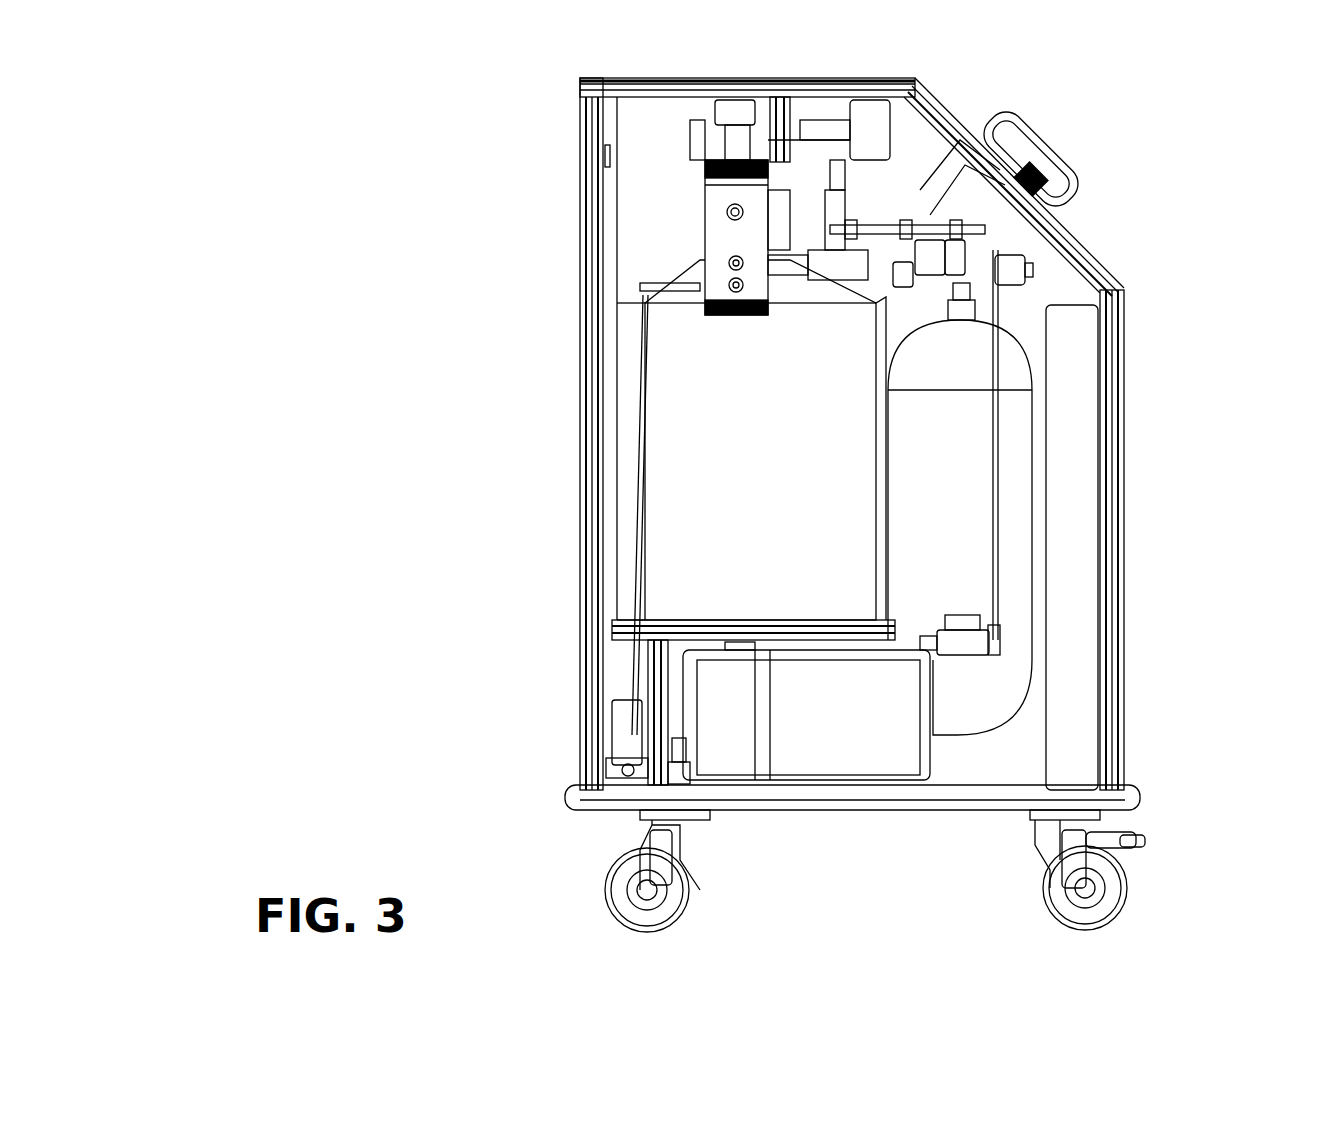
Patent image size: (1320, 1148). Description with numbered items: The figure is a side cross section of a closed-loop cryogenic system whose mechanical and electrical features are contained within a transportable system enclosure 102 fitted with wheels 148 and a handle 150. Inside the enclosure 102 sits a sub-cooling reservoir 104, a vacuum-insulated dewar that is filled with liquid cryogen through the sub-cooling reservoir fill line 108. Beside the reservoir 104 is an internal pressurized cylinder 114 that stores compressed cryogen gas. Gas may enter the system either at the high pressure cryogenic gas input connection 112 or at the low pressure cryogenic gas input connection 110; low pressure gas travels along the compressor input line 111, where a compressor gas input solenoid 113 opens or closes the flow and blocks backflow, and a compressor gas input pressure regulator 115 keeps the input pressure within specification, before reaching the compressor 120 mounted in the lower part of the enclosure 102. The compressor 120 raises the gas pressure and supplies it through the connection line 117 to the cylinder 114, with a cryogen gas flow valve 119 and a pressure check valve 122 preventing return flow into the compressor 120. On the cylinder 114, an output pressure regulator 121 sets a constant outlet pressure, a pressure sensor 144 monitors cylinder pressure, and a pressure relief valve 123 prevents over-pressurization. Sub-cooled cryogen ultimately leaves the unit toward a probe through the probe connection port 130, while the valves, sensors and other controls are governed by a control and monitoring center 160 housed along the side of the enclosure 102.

The system enclosure 102 is at (575, 135).
The sub-cooling reservoir 104 is at (751, 440).
The sub-cooling reservoir fill line 108 is at (727, 216).
The low pressure cryogenic gas input connection 110 is at (729, 285).
The compressor input line 111 is at (632, 515).
The high pressure cryogenic gas input connection 112 is at (728, 263).
The compressor gas input solenoid 113 is at (617, 723).
The pressurized cylinder 114 is at (960, 509).
The compressor gas input pressure regulator 115 is at (680, 748).
The connection line 117 is at (996, 496).
The cryogen gas flow valve 119 is at (1015, 272).
The compressor 120 is at (806, 711).
The output pressure regulator 121 is at (925, 258).
The pressure check valve 122 is at (965, 645).
The pressure relief valve 123 is at (903, 277).
The probe connection port 130 is at (1040, 170).
The pressure sensor 144 is at (920, 232).
The wheels 148 is at (625, 888).
The handles 150 is at (1007, 125).
The control and monitoring center 160 is at (1078, 590).